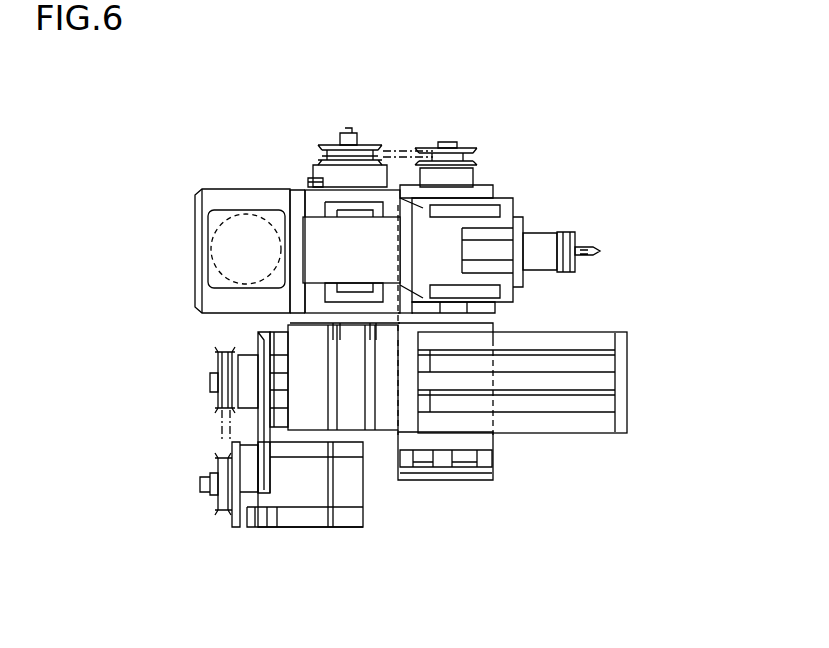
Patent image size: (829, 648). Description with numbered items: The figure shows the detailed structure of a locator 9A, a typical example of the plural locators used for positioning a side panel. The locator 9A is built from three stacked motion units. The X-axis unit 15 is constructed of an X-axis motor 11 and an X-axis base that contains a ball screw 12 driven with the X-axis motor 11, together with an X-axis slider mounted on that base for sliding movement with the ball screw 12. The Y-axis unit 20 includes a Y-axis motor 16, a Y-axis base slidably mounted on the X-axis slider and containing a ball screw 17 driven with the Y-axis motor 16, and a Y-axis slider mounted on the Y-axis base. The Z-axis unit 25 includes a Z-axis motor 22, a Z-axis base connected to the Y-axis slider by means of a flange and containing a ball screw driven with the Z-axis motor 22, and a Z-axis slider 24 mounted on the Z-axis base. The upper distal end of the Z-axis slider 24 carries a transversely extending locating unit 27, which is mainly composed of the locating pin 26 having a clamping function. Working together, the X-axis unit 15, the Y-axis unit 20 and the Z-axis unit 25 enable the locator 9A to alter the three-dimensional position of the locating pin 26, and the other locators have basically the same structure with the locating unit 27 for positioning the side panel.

The locator 9A is at (410, 138).
The X-axis motor 11 is at (312, 179).
The ball screw 12 is at (452, 142).
The X-axis unit 15 is at (508, 464).
The Y-axis motor 16 is at (283, 506).
The ball screw 17 is at (210, 381).
The Y-axis unit 20 is at (374, 452).
The Z-axis motor 22 is at (242, 215).
The Z-axis slider 24 is at (508, 199).
The Z-axis unit 25 is at (294, 279).
The locating pin 26 is at (588, 247).
The locating unit 27 is at (543, 279).